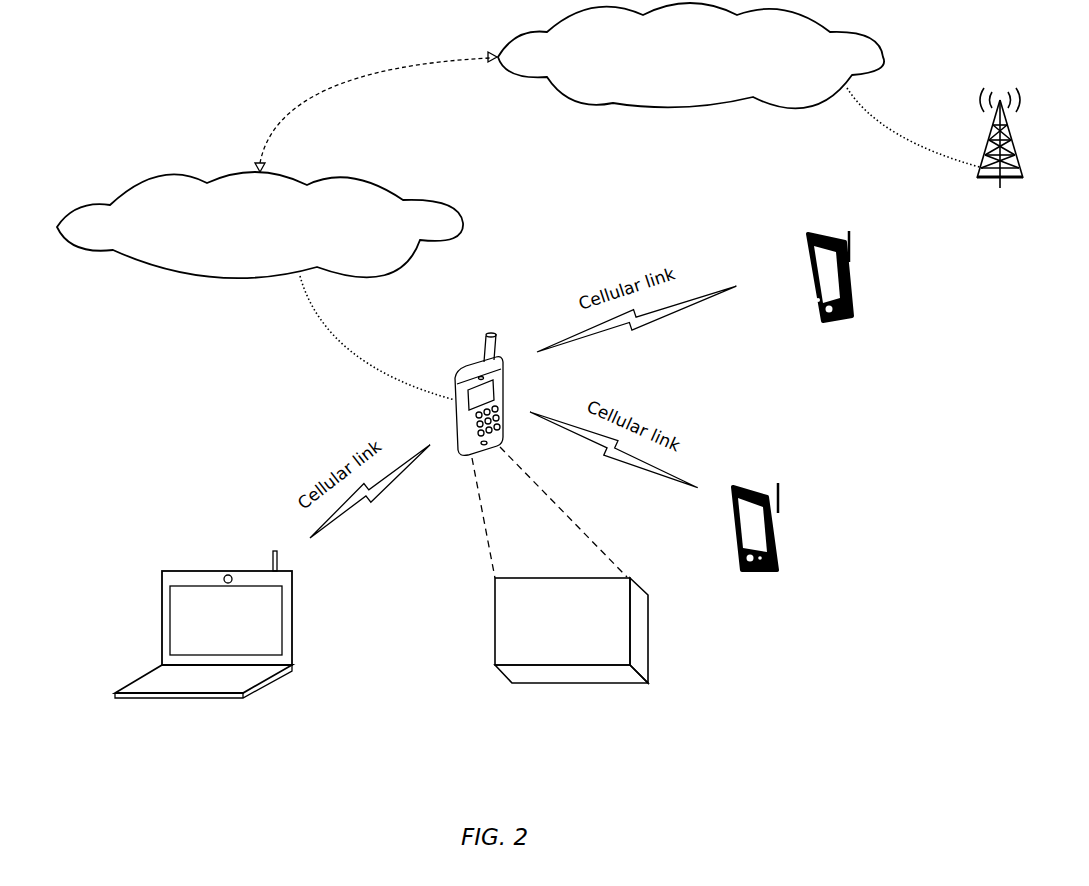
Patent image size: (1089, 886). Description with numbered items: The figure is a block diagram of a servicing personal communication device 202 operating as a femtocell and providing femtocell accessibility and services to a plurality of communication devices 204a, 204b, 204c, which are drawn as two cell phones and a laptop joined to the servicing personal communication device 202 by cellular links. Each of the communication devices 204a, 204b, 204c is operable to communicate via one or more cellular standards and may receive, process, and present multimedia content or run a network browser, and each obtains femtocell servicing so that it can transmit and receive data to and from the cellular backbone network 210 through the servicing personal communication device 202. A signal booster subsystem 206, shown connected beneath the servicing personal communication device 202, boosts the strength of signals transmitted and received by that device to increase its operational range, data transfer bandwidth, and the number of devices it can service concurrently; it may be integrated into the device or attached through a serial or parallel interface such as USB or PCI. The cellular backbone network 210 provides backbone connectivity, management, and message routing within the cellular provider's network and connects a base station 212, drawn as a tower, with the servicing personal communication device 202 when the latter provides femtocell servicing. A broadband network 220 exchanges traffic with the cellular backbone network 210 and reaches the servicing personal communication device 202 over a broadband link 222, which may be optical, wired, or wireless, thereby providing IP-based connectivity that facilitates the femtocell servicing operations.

The servicing personal communication device 202 is at (472, 362).
The communication device 204a is at (833, 323).
The communication device 204b is at (770, 572).
The communication device 204c is at (244, 694).
The signal booster subsystem 206 is at (630, 683).
The cellular backbone network 210 is at (613, 104).
The base station 212 is at (1018, 156).
The broadband network 220 is at (135, 184).
The broadband link 222 is at (322, 327).